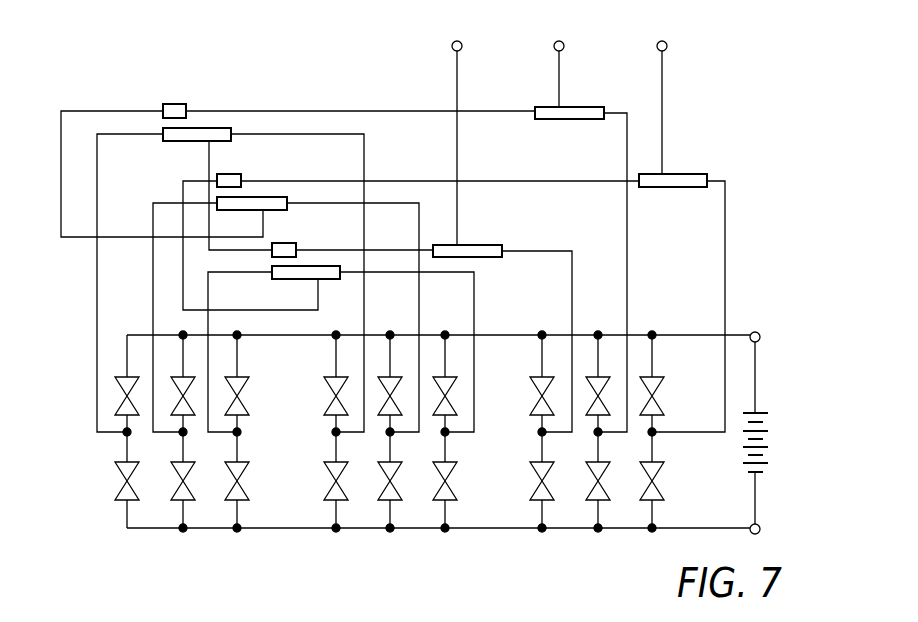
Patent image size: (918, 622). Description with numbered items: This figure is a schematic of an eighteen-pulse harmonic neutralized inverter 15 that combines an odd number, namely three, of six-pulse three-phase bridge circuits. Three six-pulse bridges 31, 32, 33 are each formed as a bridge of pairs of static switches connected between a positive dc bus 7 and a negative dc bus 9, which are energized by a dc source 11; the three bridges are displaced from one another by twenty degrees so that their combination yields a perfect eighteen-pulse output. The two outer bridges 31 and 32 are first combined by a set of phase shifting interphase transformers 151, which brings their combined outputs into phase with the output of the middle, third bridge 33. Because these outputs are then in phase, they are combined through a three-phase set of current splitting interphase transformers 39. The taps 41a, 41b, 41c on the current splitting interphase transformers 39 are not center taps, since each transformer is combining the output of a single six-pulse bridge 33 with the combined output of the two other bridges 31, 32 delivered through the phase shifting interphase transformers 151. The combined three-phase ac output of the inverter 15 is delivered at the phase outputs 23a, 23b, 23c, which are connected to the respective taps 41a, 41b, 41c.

The inverter 15 is at (779, 203).
The set of phase shifting interphase transformers 151 is at (174, 90).
The a-phase output 23a is at (463, 42).
The b-phase output 23b is at (565, 42).
The c-phase output 23c is at (668, 42).
The tap 41a is at (455, 100).
The tap 41b is at (557, 90).
The tap 41c is at (660, 108).
The current splitting interphase transformers 39 is at (690, 142).
The positive dc bus 7 is at (738, 334).
The negative dc bus 9 is at (727, 528).
The dc source 11 is at (768, 442).
The first six-pulse bridge 31 is at (203, 543).
The second six-pulse bridge 32 is at (399, 543).
The third six-pulse bridge 33 is at (585, 545).